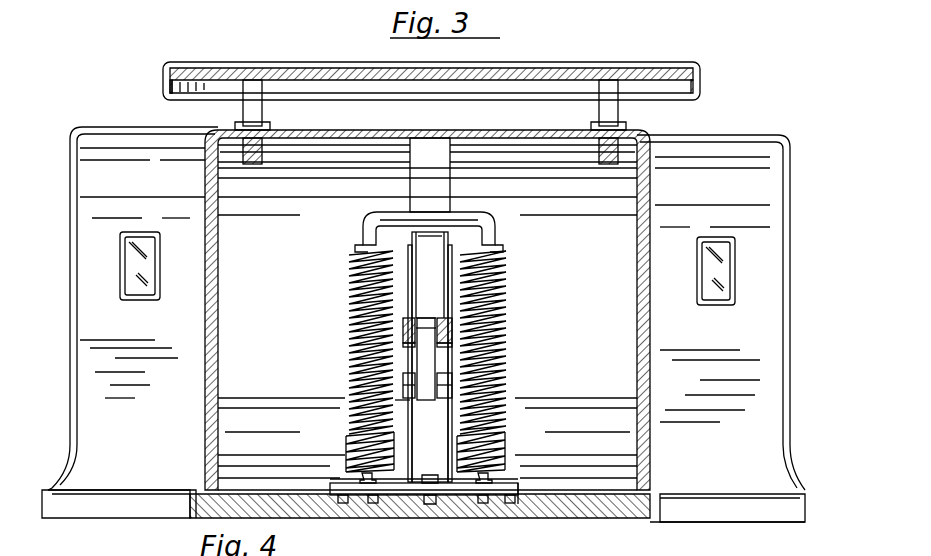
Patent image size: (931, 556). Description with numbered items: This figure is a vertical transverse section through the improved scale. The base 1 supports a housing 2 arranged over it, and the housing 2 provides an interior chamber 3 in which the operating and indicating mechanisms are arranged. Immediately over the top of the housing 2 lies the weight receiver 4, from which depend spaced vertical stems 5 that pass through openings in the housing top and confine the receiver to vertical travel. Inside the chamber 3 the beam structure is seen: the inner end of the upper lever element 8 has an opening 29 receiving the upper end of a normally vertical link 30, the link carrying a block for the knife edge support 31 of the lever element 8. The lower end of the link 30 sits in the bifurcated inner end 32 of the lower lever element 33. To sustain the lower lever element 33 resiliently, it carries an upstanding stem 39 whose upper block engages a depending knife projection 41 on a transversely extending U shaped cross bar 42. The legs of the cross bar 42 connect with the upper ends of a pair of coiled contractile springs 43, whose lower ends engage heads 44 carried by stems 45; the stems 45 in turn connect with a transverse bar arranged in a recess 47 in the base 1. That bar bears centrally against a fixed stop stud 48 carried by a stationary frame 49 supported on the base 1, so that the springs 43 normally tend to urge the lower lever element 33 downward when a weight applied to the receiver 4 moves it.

The base 1 is at (636, 522).
The housing 2 is at (426, 308).
The interior chamber 3 is at (427, 310).
The weight receiver 4 is at (703, 88).
The vertical stems 5 is at (263, 110).
The lever element 8 is at (454, 330).
The opening 29 is at (458, 344).
The link 30 is at (430, 364).
The knife edge support 31 is at (424, 320).
The bifurcated inner end 32 is at (358, 402).
The lower lever element 33 is at (455, 386).
The upstanding stem 39 is at (426, 256).
The depending knife projection 41 is at (438, 232).
The U shaped cross bar 42 is at (378, 224).
The coiled contractile springs 43 is at (352, 292).
The heads 44 is at (346, 452).
The stems 45 is at (492, 478).
The recess 47 is at (490, 516).
The fixed stop stud 48 is at (428, 505).
The stationary frame 49 is at (520, 500).